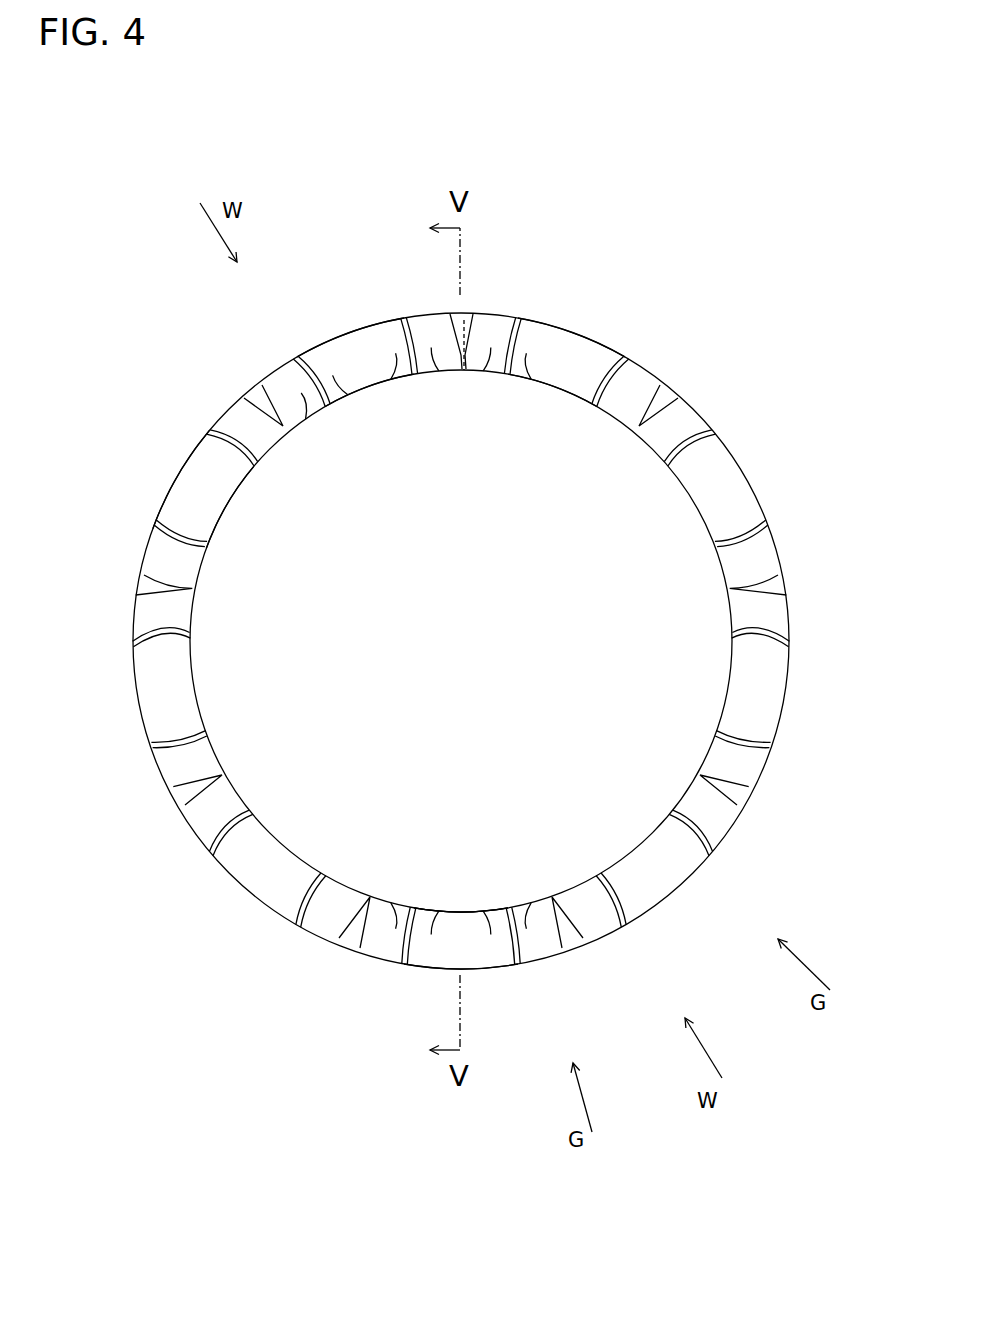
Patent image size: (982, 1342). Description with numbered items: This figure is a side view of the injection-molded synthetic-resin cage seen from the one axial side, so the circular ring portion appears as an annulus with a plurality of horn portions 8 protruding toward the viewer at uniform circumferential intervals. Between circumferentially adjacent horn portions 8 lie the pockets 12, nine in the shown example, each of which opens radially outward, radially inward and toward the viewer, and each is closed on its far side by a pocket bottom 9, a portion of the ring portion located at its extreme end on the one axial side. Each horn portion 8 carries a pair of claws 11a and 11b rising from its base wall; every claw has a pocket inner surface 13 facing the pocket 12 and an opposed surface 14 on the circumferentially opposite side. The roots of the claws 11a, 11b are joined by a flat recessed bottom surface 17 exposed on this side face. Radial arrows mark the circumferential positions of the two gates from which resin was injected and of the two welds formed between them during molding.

The horn portion 8 is at (487, 306).
The pocket bottom 9 is at (460, 937).
The claw 11a is at (512, 310).
The claw 11b is at (413, 312).
The pocket 12 is at (357, 360).
The pocket inner surface 13 is at (329, 396).
The opposed surface 14 is at (298, 402).
The recessed bottom surface 17 is at (463, 372).